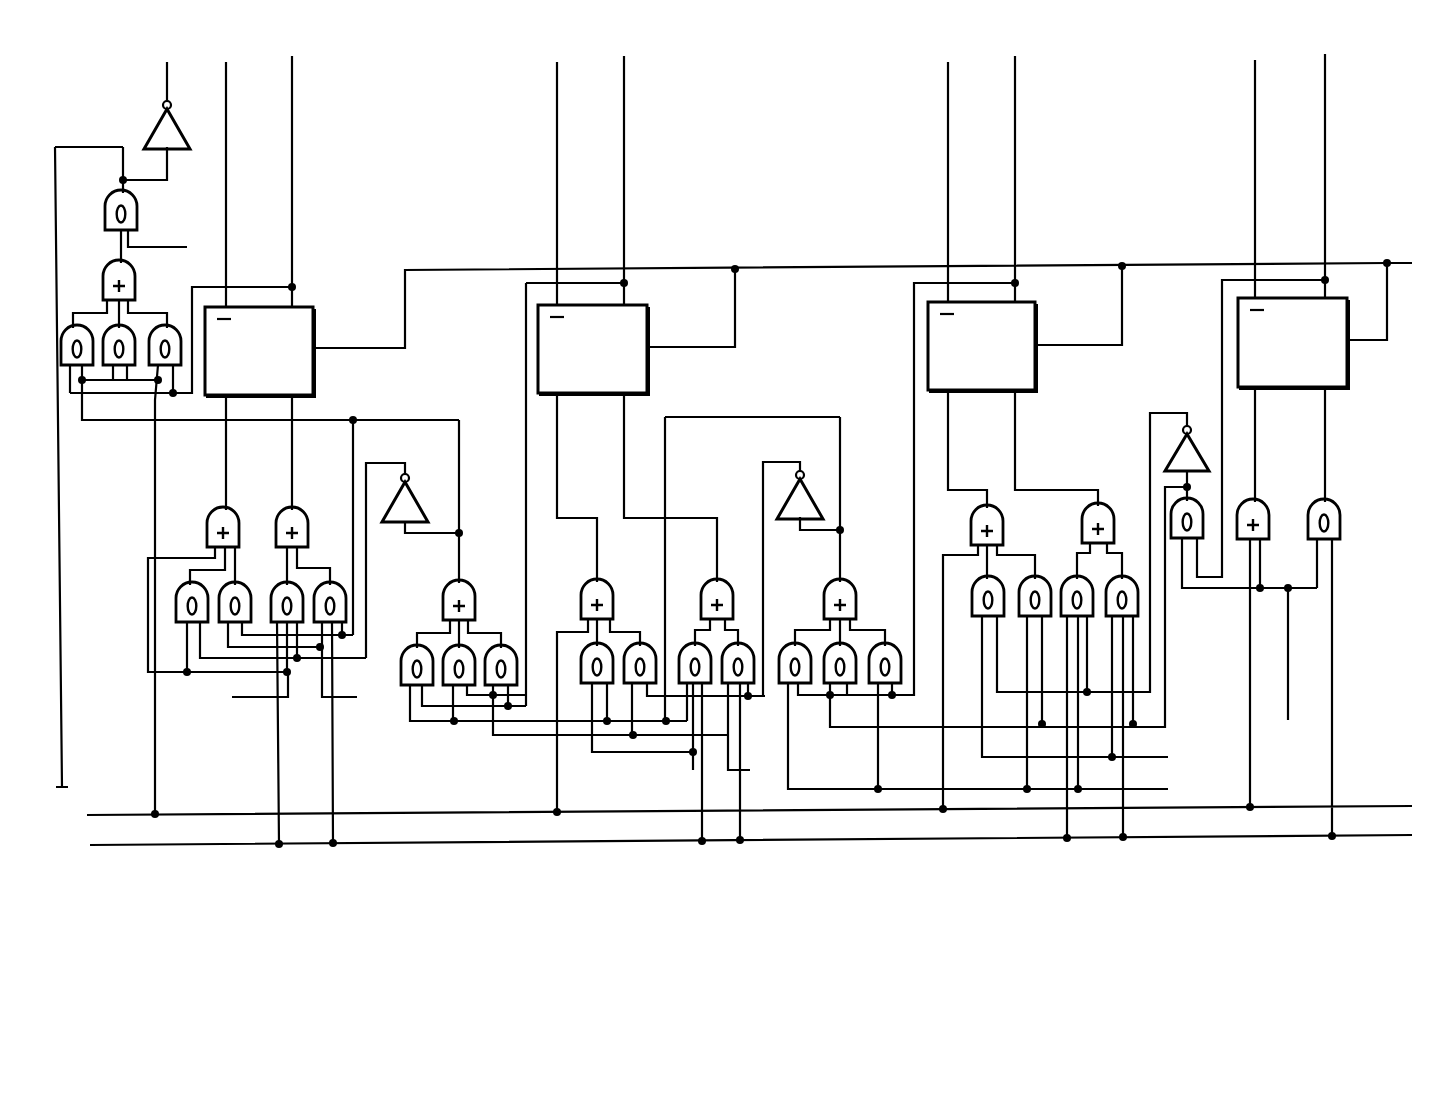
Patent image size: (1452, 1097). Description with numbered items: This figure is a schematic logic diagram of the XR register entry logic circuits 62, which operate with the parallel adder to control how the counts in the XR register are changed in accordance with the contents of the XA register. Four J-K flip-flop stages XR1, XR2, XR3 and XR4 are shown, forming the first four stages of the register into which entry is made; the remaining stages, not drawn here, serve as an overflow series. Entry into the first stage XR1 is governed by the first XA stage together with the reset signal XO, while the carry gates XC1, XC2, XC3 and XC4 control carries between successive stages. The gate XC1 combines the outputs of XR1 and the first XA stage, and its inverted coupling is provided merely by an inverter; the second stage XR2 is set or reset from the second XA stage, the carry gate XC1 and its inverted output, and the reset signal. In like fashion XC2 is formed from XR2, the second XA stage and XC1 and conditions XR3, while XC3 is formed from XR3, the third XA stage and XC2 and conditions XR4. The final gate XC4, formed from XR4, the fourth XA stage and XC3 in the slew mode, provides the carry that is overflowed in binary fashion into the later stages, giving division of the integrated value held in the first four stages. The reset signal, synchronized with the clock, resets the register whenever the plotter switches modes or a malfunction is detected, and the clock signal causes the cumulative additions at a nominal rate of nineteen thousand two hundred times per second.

The XR register entry logic circuits 62 is at (246, 880).
The XR register fourth stage XR4 is at (260, 352).
The XR register third stage XR3 is at (593, 350).
The XR register second stage XR2 is at (983, 347).
The XR register first stage XR1 is at (1294, 343).
The XC4 carry gate XC4 is at (149, 125).
The XC3 carry gate XC3 is at (439, 479).
The XC2 carry gate XC2 is at (828, 477).
The XC1 carry gate XC1 is at (1192, 436).